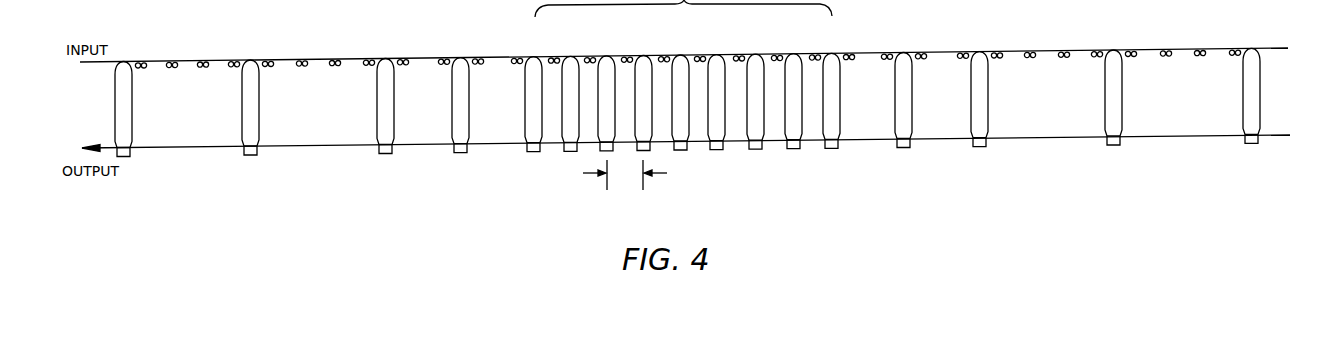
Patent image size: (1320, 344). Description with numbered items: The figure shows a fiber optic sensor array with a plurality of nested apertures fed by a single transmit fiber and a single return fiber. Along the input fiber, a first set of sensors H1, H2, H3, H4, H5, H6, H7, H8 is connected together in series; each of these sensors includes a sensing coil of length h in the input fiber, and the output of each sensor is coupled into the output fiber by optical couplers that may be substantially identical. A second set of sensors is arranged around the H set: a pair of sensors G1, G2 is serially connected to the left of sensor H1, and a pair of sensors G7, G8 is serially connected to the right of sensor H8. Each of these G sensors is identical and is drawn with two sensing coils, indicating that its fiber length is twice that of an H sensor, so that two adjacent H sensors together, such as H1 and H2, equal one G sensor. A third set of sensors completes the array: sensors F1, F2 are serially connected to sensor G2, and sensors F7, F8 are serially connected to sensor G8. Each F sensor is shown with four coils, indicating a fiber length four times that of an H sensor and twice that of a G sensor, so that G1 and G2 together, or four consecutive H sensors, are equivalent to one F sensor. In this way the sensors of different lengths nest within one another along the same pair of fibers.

The sensor F1 is at (177, 92).
The sensor F2 is at (308, 91).
The sensor G1 is at (413, 89).
The sensor G2 is at (487, 88).
The sensor H1 is at (542, 88).
The sensor H2 is at (579, 87).
The sensor H3 is at (615, 86).
The sensor H4 is at (652, 86).
The sensor H5 is at (689, 85).
The sensor H6 is at (726, 85).
The sensor H7 is at (765, 84).
The sensor H8 is at (812, 84).
The sensor G7 is at (877, 83).
The sensor G8 is at (951, 82).
The sensor F7 is at (1056, 80).
The sensor F8 is at (1192, 78).
The sensing coil length h is at (625, 175).